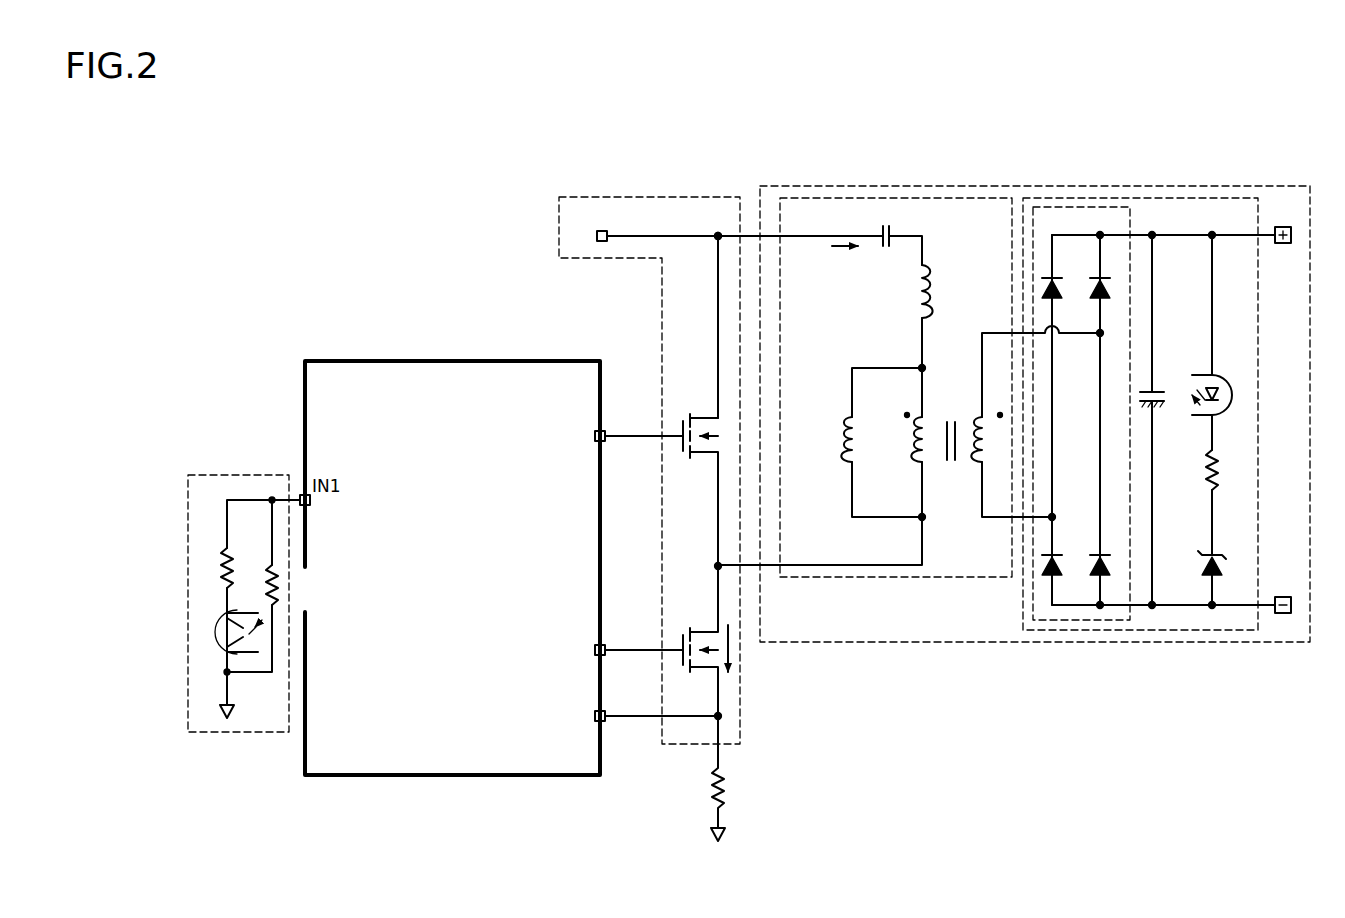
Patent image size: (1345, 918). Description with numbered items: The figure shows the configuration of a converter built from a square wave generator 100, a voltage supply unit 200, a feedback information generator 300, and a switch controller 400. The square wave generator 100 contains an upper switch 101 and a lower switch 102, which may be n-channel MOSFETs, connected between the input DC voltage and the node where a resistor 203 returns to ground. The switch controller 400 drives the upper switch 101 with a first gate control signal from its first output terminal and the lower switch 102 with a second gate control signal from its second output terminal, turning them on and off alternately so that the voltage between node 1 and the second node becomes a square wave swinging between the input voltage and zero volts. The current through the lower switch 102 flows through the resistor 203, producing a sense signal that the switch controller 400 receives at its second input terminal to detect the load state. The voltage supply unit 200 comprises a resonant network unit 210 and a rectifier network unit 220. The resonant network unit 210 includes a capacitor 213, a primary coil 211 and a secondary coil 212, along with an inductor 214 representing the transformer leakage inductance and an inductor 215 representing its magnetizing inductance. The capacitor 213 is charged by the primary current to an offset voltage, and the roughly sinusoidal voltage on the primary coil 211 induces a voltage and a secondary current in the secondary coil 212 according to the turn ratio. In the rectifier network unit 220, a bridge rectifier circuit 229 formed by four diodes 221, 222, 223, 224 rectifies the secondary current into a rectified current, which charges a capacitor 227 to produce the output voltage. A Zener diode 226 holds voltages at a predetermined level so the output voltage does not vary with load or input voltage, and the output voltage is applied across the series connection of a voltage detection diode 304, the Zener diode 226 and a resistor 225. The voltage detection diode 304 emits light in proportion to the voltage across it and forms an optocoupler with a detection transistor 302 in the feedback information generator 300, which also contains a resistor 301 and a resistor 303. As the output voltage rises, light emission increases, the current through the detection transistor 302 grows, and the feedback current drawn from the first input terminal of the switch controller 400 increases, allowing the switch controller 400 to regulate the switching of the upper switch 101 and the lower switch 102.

The node 1 is at (712, 224).
The square wave generator 100 is at (692, 197).
The upper switch 101 is at (694, 412).
The lower switch 102 is at (690, 625).
The voltage supply unit 200 is at (974, 186).
The resistor 203 is at (712, 787).
The resonant network unit 210 is at (842, 198).
The primary coil 211 is at (914, 464).
The secondary coil 212 is at (978, 470).
The capacitor 213 is at (889, 224).
The inductor 214 is at (910, 314).
The inductor 215 is at (842, 464).
The rectifier network unit 220 is at (1197, 198).
The diode 221 is at (1060, 292).
The diode 222 is at (1108, 292).
The diode 223 is at (1060, 568).
The diode 224 is at (1108, 568).
The resistor 225 is at (1204, 468).
The Zener diode 226 is at (1218, 568).
The capacitor 227 is at (1148, 404).
The bridge rectifier circuit 229 is at (1074, 207).
The feedback information generator 300 is at (188, 509).
The resistor 301 is at (220, 568).
The detection transistor 302 is at (208, 631).
The resistor 303 is at (287, 586).
The voltage detection diode 304 is at (1218, 376).
The switch controller 400 is at (433, 361).